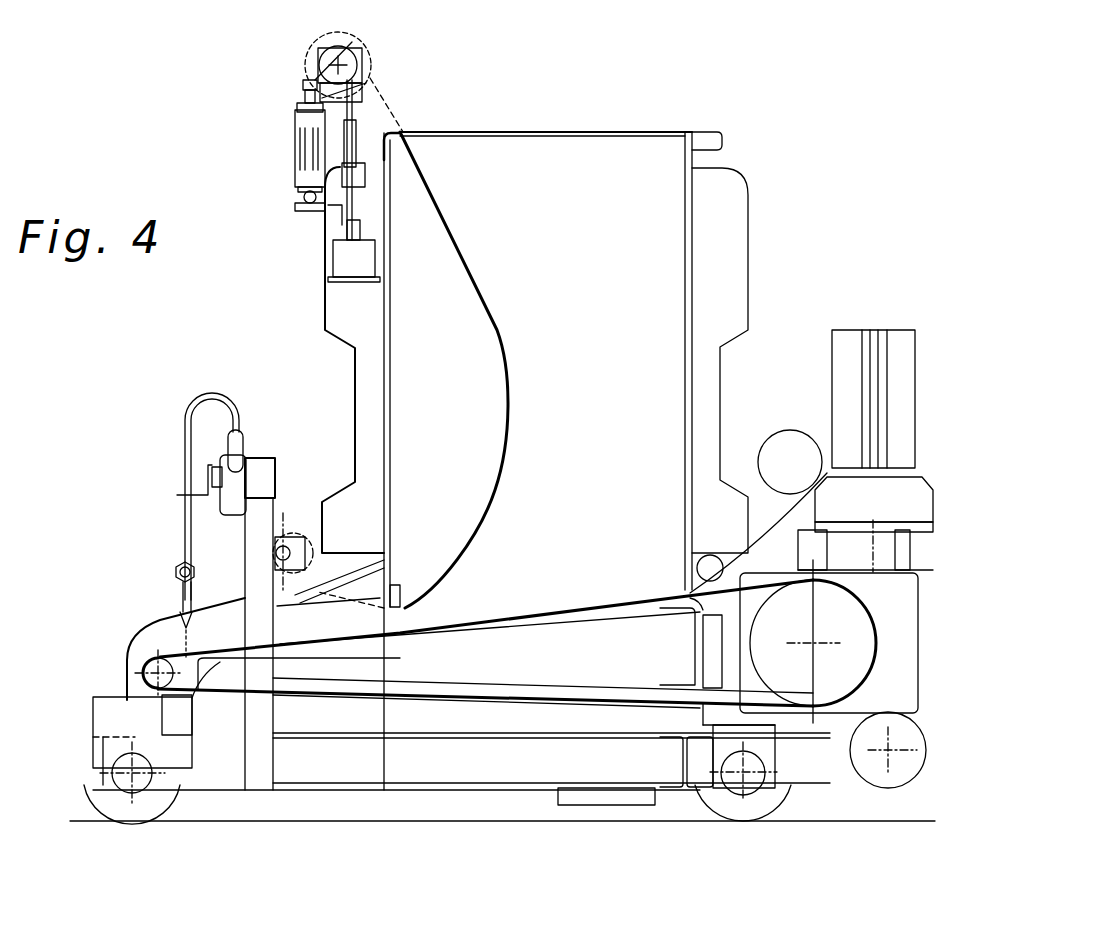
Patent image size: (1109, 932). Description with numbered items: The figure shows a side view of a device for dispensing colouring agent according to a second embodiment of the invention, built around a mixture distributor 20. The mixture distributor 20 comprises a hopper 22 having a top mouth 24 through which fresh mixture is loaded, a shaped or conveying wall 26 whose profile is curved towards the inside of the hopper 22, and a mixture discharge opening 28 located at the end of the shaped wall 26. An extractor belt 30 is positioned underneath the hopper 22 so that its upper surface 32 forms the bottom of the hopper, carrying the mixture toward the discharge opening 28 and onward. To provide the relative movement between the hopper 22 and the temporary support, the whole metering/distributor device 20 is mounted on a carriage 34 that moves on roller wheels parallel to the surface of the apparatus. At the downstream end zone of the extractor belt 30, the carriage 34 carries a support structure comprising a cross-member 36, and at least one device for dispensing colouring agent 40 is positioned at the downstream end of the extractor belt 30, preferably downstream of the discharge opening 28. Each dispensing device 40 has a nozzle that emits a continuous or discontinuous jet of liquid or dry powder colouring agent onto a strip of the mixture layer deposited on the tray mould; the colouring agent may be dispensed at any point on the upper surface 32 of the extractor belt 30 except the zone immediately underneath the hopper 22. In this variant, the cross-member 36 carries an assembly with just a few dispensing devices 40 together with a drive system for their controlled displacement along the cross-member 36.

The mixture distributor 20 is at (788, 186).
The hopper 22 is at (722, 190).
The top mouth 24 is at (518, 133).
The shaped or conveying wall 26 is at (463, 262).
The mixture discharge opening 28 is at (426, 610).
The extractor belt 30 is at (590, 683).
The upper surface 32 is at (592, 607).
The carriage 34 is at (326, 805).
The cross-member 36 is at (278, 478).
The device for dispensing colouring agent 40 is at (173, 572).